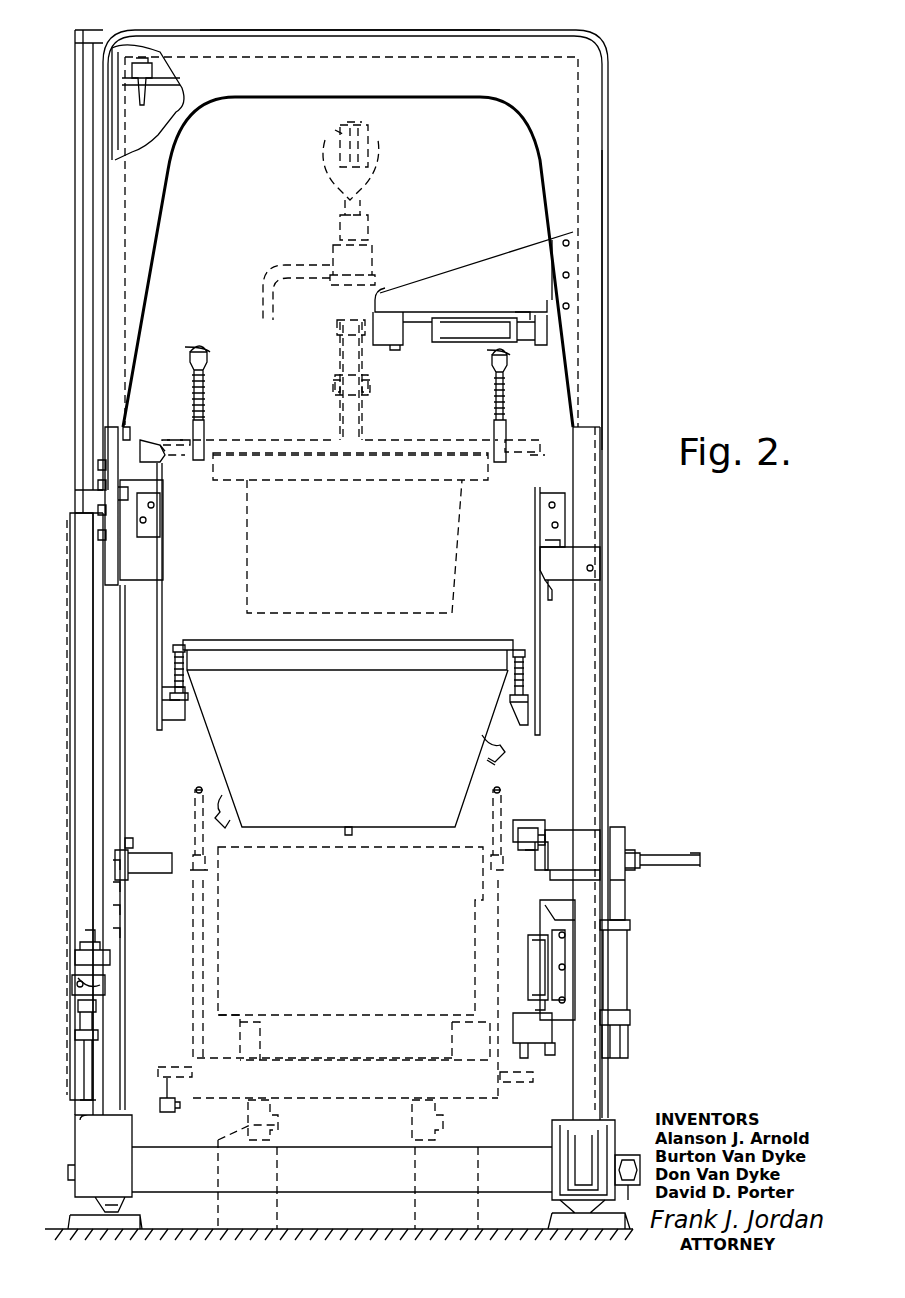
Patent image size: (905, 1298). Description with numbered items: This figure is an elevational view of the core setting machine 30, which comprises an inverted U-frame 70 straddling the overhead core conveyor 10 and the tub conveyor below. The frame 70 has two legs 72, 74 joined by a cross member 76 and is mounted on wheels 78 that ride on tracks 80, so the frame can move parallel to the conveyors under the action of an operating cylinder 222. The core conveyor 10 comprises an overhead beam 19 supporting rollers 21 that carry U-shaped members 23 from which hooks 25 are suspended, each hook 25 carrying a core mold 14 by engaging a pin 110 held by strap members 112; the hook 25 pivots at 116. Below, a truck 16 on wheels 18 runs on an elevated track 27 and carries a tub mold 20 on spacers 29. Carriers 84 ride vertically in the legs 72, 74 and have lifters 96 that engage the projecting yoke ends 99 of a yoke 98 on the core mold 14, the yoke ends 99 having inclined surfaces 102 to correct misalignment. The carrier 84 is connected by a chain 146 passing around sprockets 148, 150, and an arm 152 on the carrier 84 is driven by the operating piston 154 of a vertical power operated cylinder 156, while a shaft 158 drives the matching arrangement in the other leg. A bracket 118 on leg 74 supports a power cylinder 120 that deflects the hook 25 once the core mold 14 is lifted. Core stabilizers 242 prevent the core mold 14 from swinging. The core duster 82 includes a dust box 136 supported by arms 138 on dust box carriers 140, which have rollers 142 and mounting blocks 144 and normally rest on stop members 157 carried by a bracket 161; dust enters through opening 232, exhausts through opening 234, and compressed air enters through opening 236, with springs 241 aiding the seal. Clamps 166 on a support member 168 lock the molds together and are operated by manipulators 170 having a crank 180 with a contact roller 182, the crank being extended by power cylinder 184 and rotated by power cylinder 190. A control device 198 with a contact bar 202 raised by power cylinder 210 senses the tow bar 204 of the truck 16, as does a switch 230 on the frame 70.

The overhead core conveyor 10 is at (378, 150).
The core mold 14 is at (455, 572).
The truck 16 is at (220, 1105).
The wheels 18 is at (280, 1132).
The overhead beam 19 is at (368, 126).
The tub mold 20 is at (218, 945).
The rollers 21 is at (335, 132).
The U-shaped members 23 is at (278, 270).
The hook 25 is at (368, 362).
The elevated track 27 is at (410, 1146).
The spacers 29 is at (445, 1045).
The core setting machine 30 is at (678, 114).
The inverted U-frame 70 is at (608, 50).
The frame leg 72 is at (100, 215).
The frame leg 74 is at (608, 297).
The cross member 76 is at (345, 31).
The wheels 78 is at (568, 1200).
The tracks 80 is at (565, 1212).
The core duster 82 is at (463, 627).
The carrier 84 is at (139, 835).
The lifters 96 is at (145, 852).
The yoke 98 is at (432, 440).
The yoke ends 99 is at (165, 445).
The inclined surfaces 102 is at (142, 440).
The pin 110 is at (340, 365).
The strap members 112 is at (368, 418).
The hook pivot 116 is at (352, 322).
The bracket 118 is at (462, 270).
The power cylinder 120 is at (470, 340).
The dust box 136 is at (493, 766).
The arms 138 is at (162, 615).
The dust box carrier 140 is at (140, 424).
The rollers 142 is at (97, 443).
The mounting blocks 144 is at (140, 455).
The chain 146 is at (82, 803).
The sprocket 148 is at (115, 120).
The sprocket 150 is at (88, 1040).
The arm 152 is at (72, 980).
The operating piston 154 is at (88, 942).
The power operated cylinder 156 is at (80, 333).
The stop members 157 is at (578, 547).
The shaft 158 is at (158, 98).
The bracket 161 is at (570, 585).
The clamps 166 is at (197, 788).
The support member 168 is at (193, 885).
The manipulators 170 is at (642, 832).
The crank 180 is at (536, 830).
The contact roller 182 is at (523, 820).
The power cylinder 184 is at (658, 850).
The power cylinder 190 is at (628, 980).
The control device 198 is at (509, 972).
The contact bar 202 is at (530, 1060).
The tow bar 204 is at (170, 1065).
The power cylinder 210 is at (528, 975).
The operating cylinder 222 is at (630, 1155).
The switch 230 is at (165, 1098).
The opening 232 is at (495, 740).
The opening 234 is at (222, 798).
The opening 236 is at (352, 837).
The springs 241 is at (525, 680).
The core stabilizers 242 is at (207, 400).